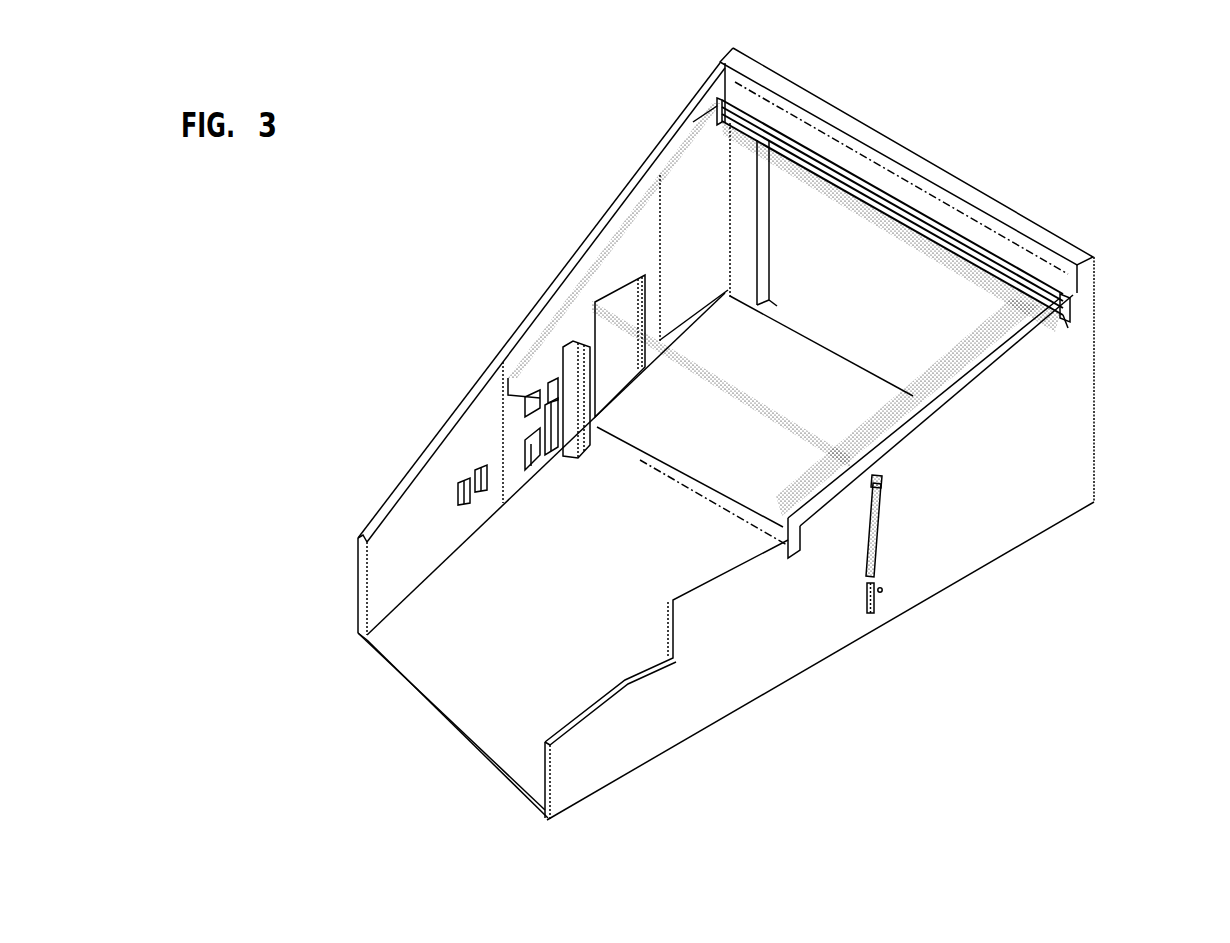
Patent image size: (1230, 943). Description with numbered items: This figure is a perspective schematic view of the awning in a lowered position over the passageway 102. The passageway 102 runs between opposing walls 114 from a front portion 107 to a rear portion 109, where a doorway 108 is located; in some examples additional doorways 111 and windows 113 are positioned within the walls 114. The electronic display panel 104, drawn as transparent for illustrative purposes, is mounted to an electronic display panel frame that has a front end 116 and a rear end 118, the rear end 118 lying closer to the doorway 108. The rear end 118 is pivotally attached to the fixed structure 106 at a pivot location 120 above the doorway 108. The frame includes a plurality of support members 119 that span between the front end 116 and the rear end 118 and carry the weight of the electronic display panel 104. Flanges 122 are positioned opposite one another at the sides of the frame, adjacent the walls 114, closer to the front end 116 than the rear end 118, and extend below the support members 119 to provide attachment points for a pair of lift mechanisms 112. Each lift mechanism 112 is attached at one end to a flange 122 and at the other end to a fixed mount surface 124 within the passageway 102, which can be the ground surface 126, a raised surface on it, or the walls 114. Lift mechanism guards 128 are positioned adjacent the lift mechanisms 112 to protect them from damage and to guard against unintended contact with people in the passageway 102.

The passageway 102 is at (503, 603).
The electronic display panel 104 is at (638, 460).
The fixed structure 106 is at (1025, 227).
The front portion 107 is at (510, 717).
The doorway 108 is at (780, 217).
The rear portion 109 is at (737, 313).
The additional doorways 111 is at (627, 293).
The lift mechanisms 112 is at (580, 343).
The windows 113 is at (678, 278).
The walls 114 is at (435, 482).
The front end 116 is at (523, 347).
The rear end 118 is at (900, 197).
The support members 119 is at (722, 103).
The pivot location 120 is at (1075, 296).
The flanges 122 is at (877, 478).
The fixed mount surface 124 is at (867, 583).
The ground surface 126 is at (397, 637).
The lift mechanism guards 128 is at (573, 447).